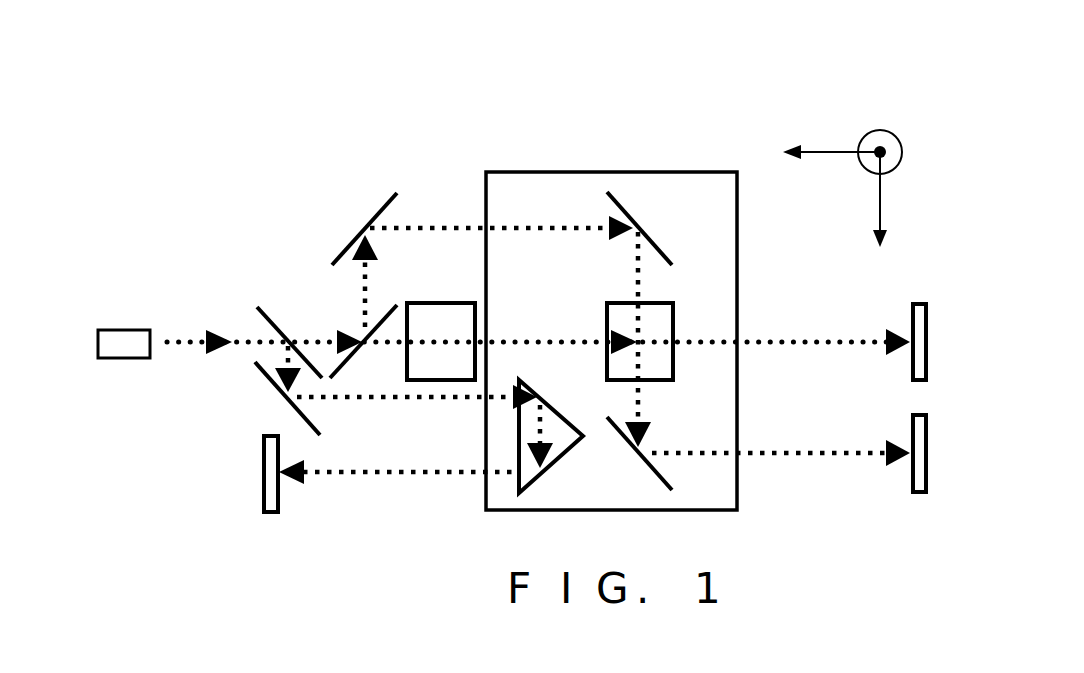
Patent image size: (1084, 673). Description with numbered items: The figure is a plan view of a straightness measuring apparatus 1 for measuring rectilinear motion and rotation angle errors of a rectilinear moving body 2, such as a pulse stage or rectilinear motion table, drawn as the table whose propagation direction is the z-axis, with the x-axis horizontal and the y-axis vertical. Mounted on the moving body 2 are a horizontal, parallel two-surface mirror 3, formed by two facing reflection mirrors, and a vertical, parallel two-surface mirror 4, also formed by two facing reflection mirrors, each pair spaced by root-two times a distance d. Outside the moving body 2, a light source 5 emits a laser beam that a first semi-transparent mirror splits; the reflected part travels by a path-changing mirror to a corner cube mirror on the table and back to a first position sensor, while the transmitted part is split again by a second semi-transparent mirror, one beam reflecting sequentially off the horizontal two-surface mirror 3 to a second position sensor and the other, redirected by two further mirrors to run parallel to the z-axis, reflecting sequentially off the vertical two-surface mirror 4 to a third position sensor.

The straightness measuring apparatus 1 is at (583, 152).
The rectilinear moving body 2 is at (625, 170).
The horizontal, parallel two-surface mirror 3 is at (690, 252).
The vertical, parallel two-surface mirror 4 is at (673, 368).
The light source 5 is at (113, 330).